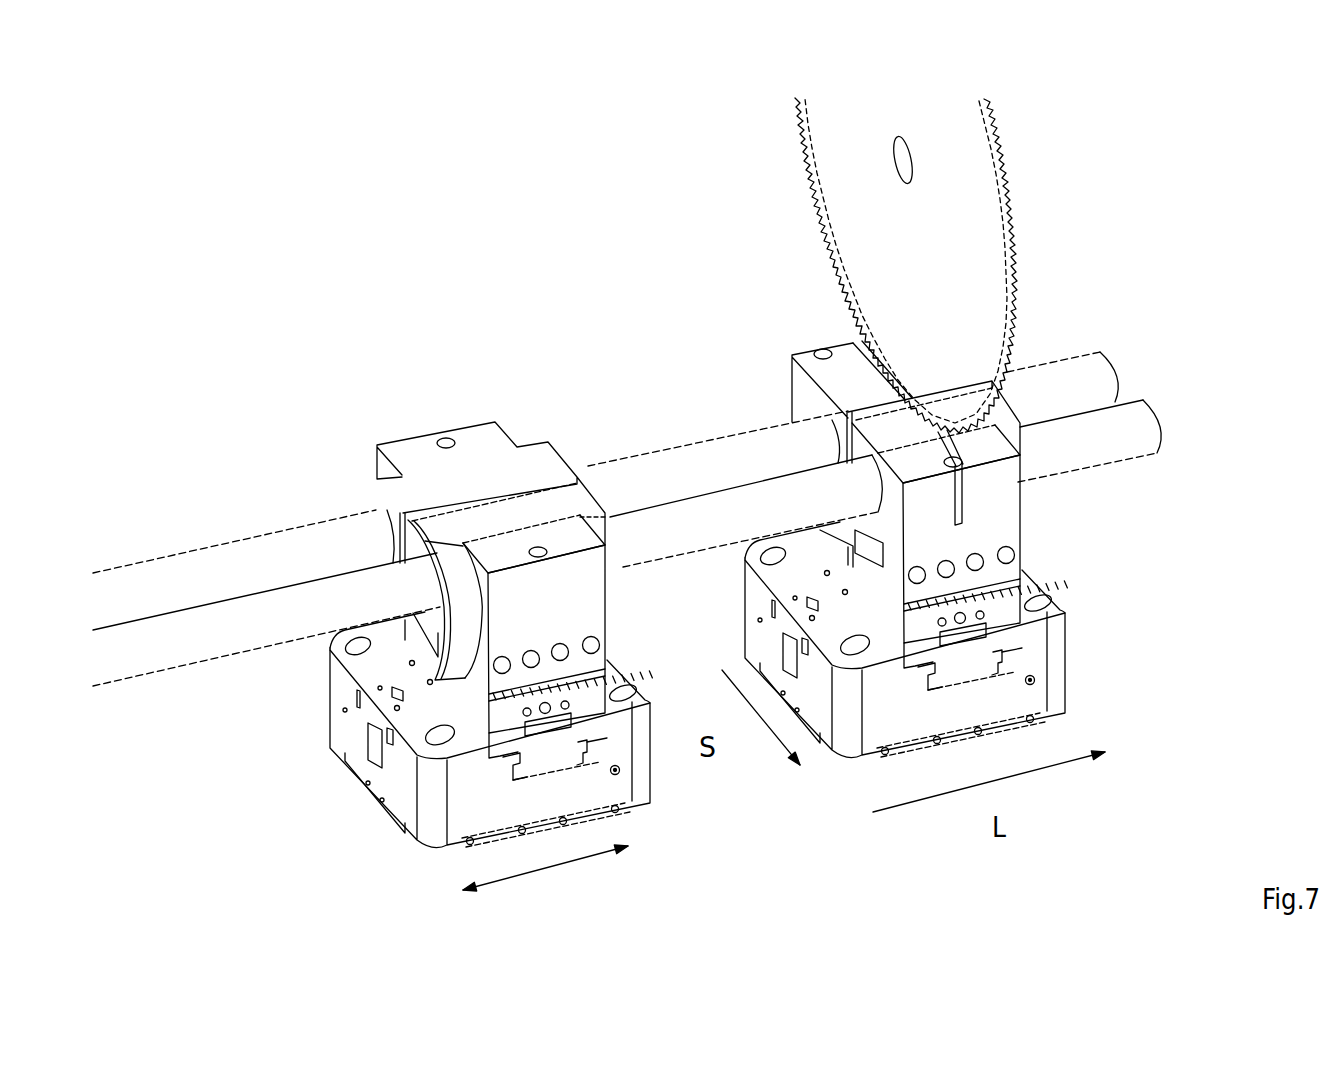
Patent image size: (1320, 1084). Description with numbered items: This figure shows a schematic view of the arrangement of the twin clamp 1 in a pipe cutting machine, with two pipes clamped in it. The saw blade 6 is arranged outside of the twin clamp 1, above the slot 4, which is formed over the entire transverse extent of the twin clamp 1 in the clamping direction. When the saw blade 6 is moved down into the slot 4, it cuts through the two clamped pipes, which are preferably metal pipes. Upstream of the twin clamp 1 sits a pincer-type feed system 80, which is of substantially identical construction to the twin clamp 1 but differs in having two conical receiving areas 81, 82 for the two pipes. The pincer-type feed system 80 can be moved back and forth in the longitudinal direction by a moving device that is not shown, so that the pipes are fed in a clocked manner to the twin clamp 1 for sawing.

The twin clamp 1 is at (737, 343).
The slot 4 is at (957, 490).
The saw blade 6 is at (977, 243).
The pincer-type feed system 80 is at (418, 521).
The conical receiving area 81 is at (427, 613).
The conical receiving area 82 is at (378, 510).